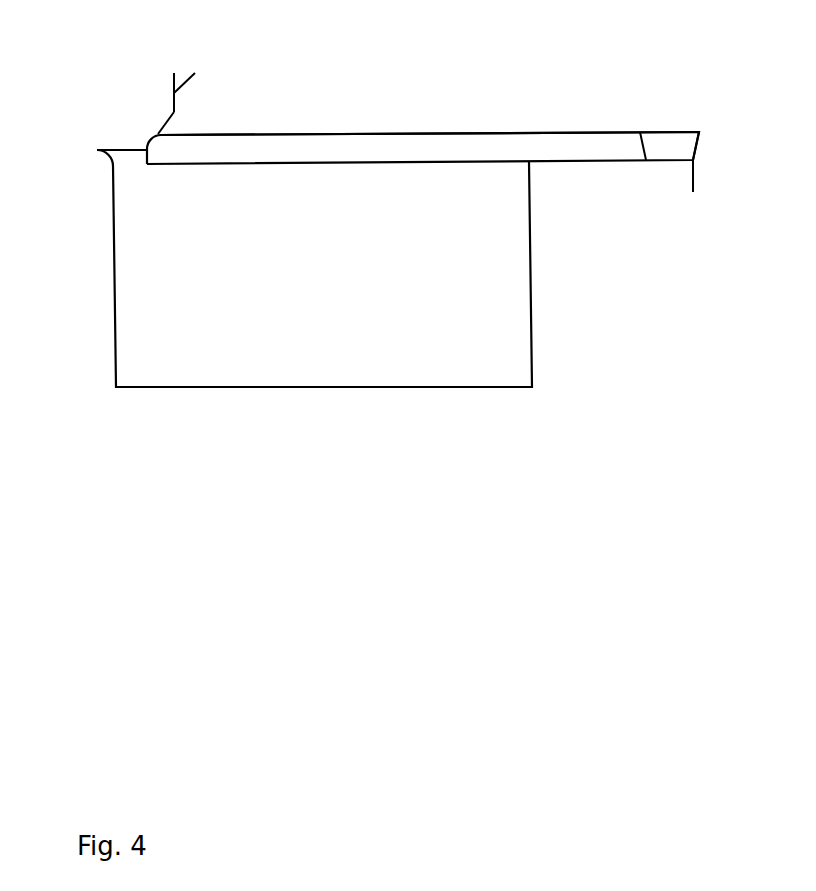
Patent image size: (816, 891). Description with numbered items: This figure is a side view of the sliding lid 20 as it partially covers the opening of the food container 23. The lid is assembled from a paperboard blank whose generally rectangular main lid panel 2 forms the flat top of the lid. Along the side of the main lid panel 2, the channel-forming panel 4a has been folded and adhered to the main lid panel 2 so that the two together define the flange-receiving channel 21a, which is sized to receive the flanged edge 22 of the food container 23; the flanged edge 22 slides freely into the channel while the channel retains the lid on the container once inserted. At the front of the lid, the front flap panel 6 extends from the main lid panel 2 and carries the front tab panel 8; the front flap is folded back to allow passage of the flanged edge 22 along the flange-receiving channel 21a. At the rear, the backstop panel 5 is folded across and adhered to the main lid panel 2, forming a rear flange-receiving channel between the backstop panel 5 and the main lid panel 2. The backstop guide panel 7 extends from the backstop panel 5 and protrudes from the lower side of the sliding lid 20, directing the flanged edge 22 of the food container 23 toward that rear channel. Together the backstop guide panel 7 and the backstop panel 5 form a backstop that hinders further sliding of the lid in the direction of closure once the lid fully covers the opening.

The main lid panel 2 is at (163, 123).
The channel-forming panel 4a is at (517, 142).
The backstop panel 5 is at (665, 138).
The front flap panel 6 is at (173, 91).
The backstop guide panel 7 is at (693, 177).
The front tab panel 8 is at (185, 85).
The sliding lid 20 is at (366, 133).
The flange-receiving channel 21a is at (157, 140).
The flanged edge 22 is at (97, 150).
The food container 23 is at (114, 275).